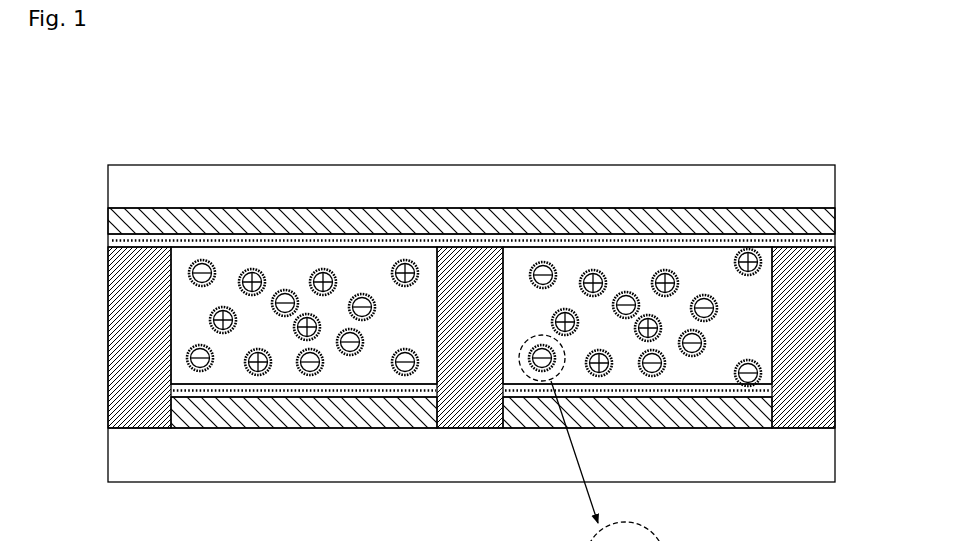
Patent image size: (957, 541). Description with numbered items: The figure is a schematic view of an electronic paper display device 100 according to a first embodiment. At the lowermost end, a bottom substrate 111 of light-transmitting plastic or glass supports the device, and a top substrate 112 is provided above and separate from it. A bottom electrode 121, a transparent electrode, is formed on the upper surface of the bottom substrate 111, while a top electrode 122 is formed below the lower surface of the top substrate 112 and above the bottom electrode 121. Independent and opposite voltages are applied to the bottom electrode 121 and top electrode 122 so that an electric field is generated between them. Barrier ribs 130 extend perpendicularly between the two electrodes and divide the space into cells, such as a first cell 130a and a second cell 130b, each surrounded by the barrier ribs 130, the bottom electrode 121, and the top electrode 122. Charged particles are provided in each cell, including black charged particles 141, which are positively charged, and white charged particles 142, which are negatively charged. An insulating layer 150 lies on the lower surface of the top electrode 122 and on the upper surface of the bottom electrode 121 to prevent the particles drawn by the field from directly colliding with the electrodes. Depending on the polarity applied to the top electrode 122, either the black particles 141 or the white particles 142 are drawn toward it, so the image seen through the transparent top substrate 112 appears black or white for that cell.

The electronic paper display device 100 is at (108, 150).
The bottom substrate 111 is at (818, 457).
The top substrate 112 is at (818, 192).
The bottom electrode 121 is at (727, 425).
The top electrode 122 is at (818, 220).
The barrier ribs 130 is at (818, 405).
The first cell 130a is at (745, 320).
The second cell 130b is at (189, 316).
The black charged particles 141 is at (762, 259).
The white charged particles 142 is at (762, 367).
The insulating layer 150 is at (818, 240).